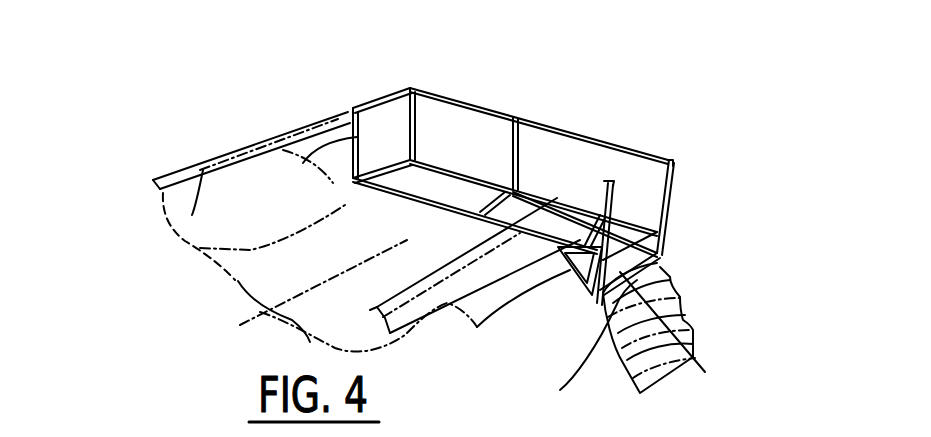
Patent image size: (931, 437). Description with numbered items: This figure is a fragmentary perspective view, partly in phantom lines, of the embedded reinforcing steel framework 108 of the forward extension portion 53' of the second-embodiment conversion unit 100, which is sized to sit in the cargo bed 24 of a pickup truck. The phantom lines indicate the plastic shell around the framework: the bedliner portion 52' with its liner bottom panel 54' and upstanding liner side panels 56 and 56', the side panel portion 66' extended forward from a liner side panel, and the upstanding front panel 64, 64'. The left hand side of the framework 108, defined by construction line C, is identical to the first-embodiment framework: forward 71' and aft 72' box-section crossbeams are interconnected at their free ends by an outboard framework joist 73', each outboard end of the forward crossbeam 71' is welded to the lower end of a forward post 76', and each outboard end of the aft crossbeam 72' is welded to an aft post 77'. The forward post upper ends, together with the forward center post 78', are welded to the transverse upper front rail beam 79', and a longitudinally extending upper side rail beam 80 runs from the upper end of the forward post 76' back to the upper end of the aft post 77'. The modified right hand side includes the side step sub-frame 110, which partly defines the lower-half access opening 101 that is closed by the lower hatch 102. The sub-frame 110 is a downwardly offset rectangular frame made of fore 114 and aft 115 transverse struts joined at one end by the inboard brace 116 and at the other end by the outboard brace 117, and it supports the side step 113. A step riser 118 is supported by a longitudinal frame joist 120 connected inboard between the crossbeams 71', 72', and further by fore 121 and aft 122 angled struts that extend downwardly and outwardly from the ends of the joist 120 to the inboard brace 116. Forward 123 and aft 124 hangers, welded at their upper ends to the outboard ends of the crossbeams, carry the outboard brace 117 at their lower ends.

The bedliner portion 52' is at (251, 125).
The conversion unit 100 is at (295, 100).
The upper side rail beam 80 is at (371, 104).
The side panel portion 66' is at (427, 60).
The upper front rail beam 79' is at (560, 86).
The front panel 64 is at (541, 104).
The forward center post 78' is at (573, 133).
The frame joist 120 is at (522, 235).
The extension portion 53' is at (627, 84).
The front panel 64' is at (688, 92).
The framework 108 is at (682, 133).
The liner side panel 56 is at (141, 225).
The aft post 77' is at (508, 165).
The outboard framework joist 73' is at (384, 133).
The forward post 76' is at (535, 153).
The forward crossbeam 71' is at (521, 193).
The aft crossbeam 72' is at (272, 216).
The cargo bed 24 is at (488, 198).
The lower-half opening 101 is at (656, 196).
The fore angled strut 121 is at (620, 218).
The lower hatch 102 is at (697, 243).
The step riser 118 is at (573, 258).
The inboard brace 116 is at (583, 262).
The forward hanger 123 is at (660, 250).
The liner bottom panel 54' is at (205, 302).
The construction line C is at (258, 314).
The liner side panel 56' is at (341, 334).
The aft angled strut 122 is at (545, 268).
The aft transverse strut 115 is at (566, 290).
The side step sub-frame 110 is at (578, 310).
The fore transverse strut 114 is at (660, 253).
The outboard brace 117 is at (663, 260).
The aft hanger 124 is at (560, 390).
The side step 113 is at (703, 377).